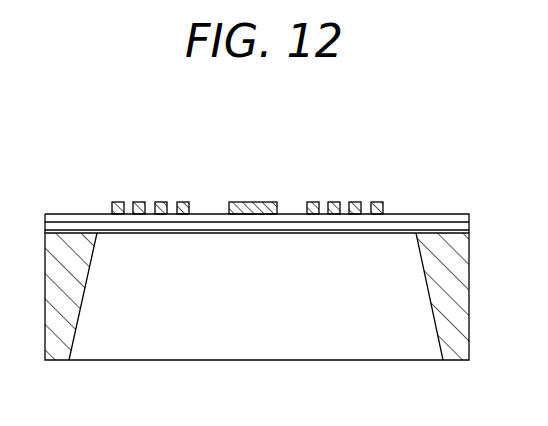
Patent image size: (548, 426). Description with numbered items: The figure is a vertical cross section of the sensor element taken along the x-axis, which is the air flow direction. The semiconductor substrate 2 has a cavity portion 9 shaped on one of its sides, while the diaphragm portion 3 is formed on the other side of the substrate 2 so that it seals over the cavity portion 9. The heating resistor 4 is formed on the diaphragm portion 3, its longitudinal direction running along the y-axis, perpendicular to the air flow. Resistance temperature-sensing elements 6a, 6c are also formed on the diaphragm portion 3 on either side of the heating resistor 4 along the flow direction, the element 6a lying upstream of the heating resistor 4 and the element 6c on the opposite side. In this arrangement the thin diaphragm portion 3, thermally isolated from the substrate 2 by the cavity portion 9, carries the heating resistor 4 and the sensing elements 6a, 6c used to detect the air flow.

The semiconductor substrate 2 is at (455, 273).
The diaphragm portion 3 is at (296, 226).
The heating resistor 4 is at (255, 202).
The resistance temperature-sensing element 6a is at (138, 202).
The resistance temperature-sensing element 6c is at (355, 202).
The cavity portion 9 is at (177, 313).